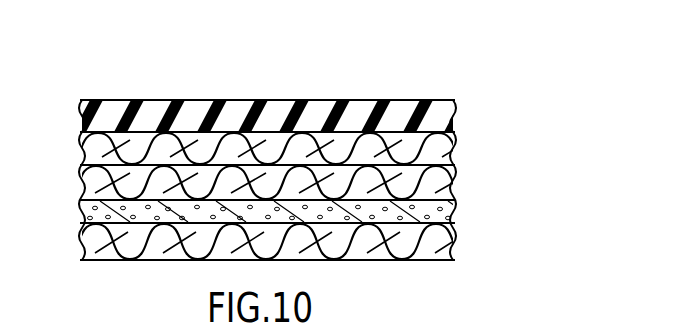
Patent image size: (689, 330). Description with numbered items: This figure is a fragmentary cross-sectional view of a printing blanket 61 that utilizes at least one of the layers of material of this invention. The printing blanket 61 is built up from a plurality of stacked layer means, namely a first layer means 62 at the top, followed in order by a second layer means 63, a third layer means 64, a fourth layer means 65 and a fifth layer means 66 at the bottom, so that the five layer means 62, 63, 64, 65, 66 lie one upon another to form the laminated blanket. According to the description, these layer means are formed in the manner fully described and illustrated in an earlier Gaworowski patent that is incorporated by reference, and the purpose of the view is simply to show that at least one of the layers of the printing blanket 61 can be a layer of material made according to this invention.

The printing blanket 61 is at (472, 90).
The layer means 62 is at (452, 113).
The layer means 63 is at (450, 146).
The layer means 64 is at (445, 182).
The layer means 65 is at (447, 217).
The layer means 66 is at (447, 258).